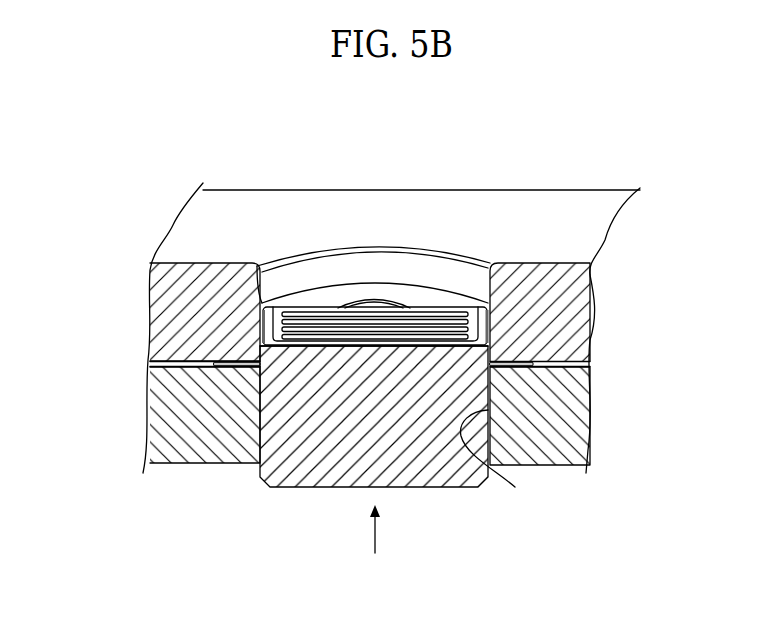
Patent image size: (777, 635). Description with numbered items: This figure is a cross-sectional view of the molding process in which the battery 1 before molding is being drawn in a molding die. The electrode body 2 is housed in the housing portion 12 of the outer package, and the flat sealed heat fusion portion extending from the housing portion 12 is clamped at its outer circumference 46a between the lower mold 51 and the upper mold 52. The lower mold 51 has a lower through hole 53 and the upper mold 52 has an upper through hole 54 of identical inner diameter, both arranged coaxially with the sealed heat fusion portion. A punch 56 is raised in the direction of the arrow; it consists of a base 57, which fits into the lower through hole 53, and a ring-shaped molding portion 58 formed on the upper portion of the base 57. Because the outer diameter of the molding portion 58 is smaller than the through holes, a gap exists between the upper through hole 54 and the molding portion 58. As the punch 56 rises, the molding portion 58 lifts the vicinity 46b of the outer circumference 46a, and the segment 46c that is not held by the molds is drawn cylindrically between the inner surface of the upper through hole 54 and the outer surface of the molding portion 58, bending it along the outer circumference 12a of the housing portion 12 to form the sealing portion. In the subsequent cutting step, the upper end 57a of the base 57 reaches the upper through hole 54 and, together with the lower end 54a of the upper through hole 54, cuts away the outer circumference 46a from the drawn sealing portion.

The battery 1 is at (373, 244).
The electrode body 2 is at (458, 303).
The housing portion 12 is at (425, 293).
The outer circumference of the housing portion 12a is at (489, 330).
The outer circumference of the sealed heat fusion portion 46a is at (523, 367).
The vicinity of the outer circumference 46b is at (262, 271).
The segment of the sealed heat fusion portion 46c is at (264, 319).
The lower mold 51 is at (565, 450).
The upper mold 52 is at (566, 205).
The lower through hole 53 is at (515, 487).
The upper through hole 54 is at (277, 277).
The lower end of the upper through hole 54a is at (490, 353).
The punch 56 is at (271, 445).
The base 57 is at (262, 465).
The upper end of the base 57a is at (483, 350).
The molding portion 58 is at (263, 338).